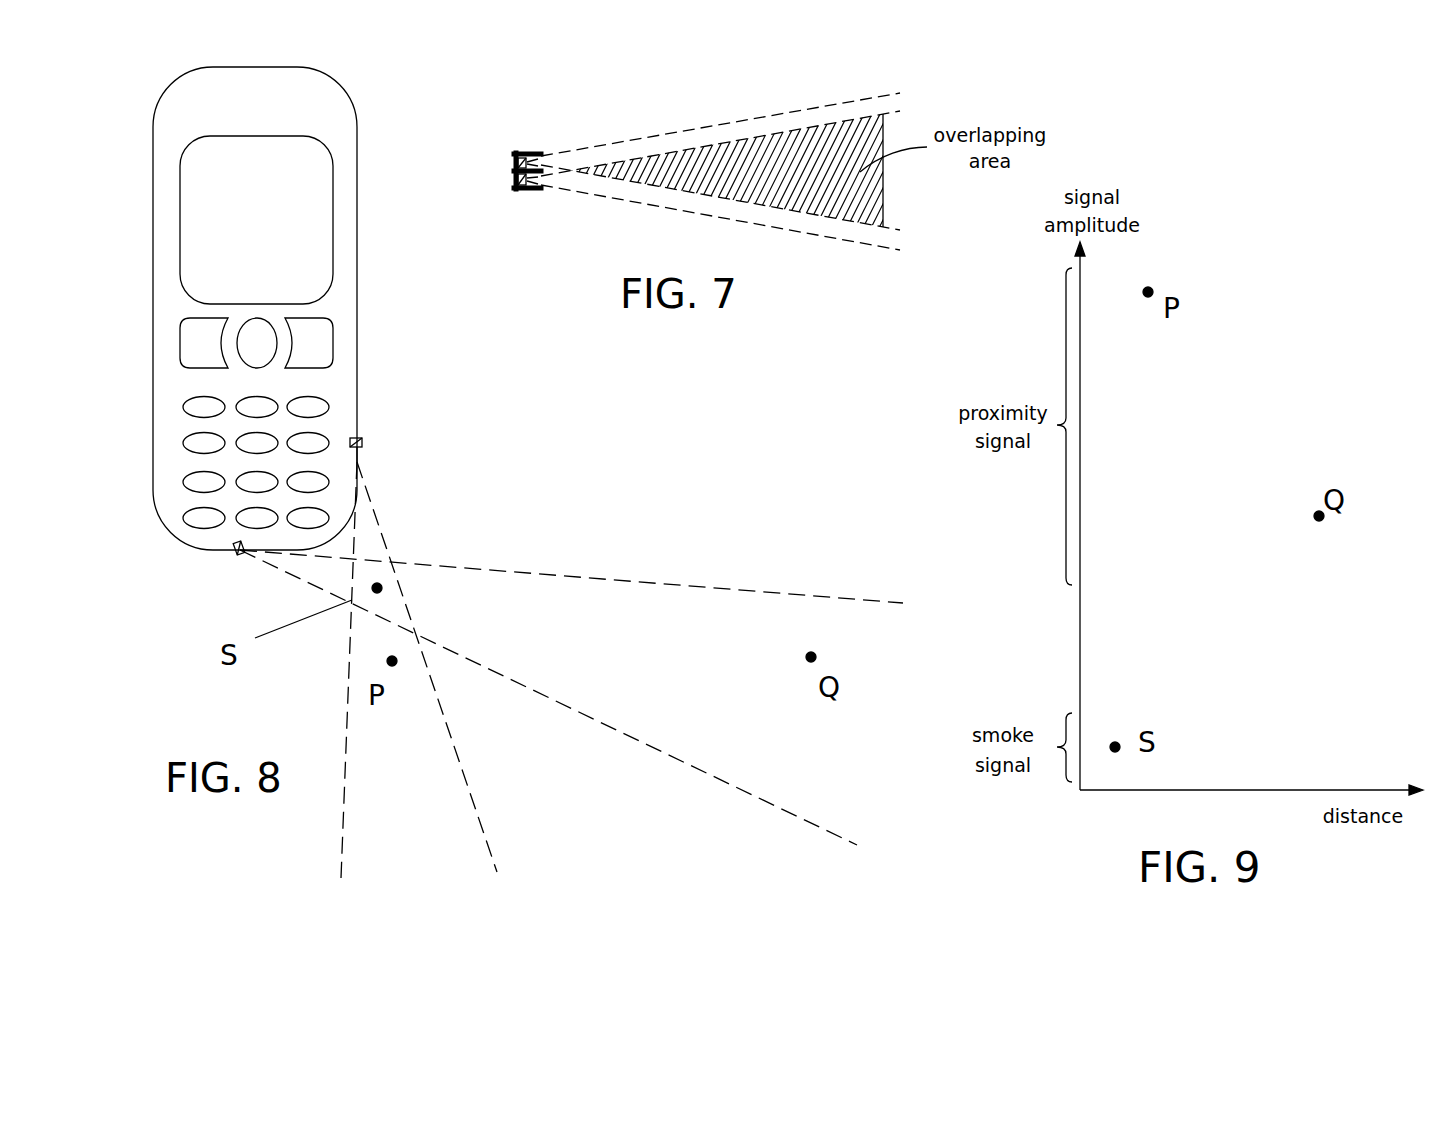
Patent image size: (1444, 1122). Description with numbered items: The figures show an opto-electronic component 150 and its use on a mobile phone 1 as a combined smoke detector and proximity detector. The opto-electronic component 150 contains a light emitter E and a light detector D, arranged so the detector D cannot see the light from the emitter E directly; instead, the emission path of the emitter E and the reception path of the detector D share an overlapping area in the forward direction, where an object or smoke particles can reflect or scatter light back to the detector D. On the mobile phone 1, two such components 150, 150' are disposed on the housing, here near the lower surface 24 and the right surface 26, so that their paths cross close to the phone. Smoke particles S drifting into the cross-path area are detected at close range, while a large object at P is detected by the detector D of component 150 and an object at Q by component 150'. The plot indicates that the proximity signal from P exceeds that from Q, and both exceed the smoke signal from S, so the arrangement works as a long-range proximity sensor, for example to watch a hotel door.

In FIG. 8, the mobile phone 1 is at (386, 136).
In FIG. 8, the lower surface 24 is at (195, 552).
In FIG. 8, the right surface 26 is at (358, 258).
In FIG. 7, the opto-electronic component 150 is at (556, 148).
In FIG. 8, the opto-electronic component 150 is at (394, 435).
In FIG. 8, the opto-electronic component 150' is at (222, 576).
In FIG. 7, the light emitter E is at (513, 160).
In FIG. 7, the light detector D is at (513, 181).